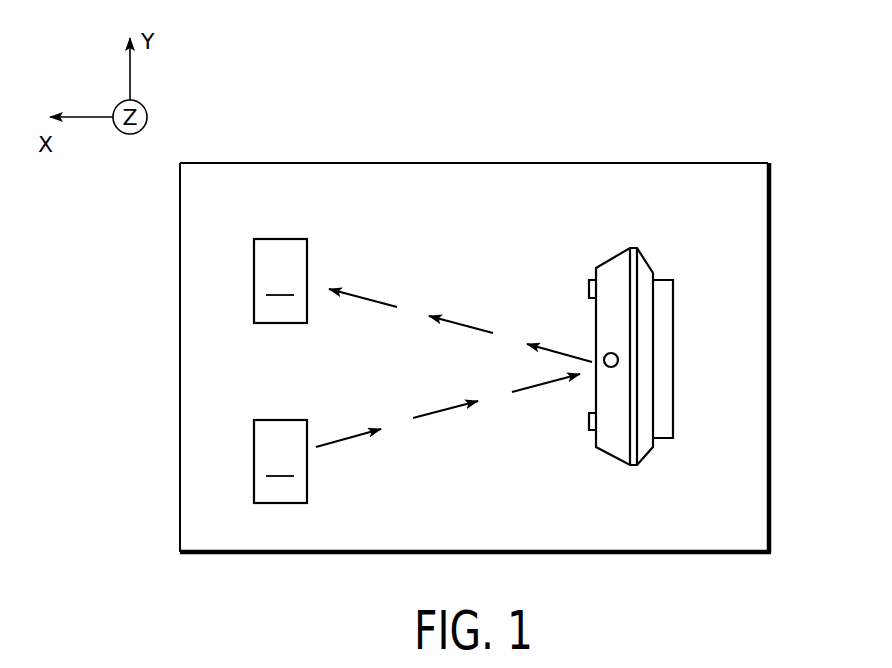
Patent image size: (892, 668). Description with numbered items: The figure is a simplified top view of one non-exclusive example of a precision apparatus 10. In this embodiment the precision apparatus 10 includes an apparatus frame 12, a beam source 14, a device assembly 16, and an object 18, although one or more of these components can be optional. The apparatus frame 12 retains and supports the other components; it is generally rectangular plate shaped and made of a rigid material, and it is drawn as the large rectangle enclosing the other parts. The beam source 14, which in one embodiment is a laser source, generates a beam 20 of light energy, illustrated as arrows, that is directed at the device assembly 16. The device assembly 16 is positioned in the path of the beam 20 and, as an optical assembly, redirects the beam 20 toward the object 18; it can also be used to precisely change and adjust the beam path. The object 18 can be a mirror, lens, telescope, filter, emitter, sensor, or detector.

The precision apparatus 10 is at (517, 318).
The apparatus frame 12 is at (755, 311).
The beam source 14 is at (417, 438).
The device assembly 16 is at (680, 408).
The object 18 is at (423, 300).
The beam 20 is at (347, 441).